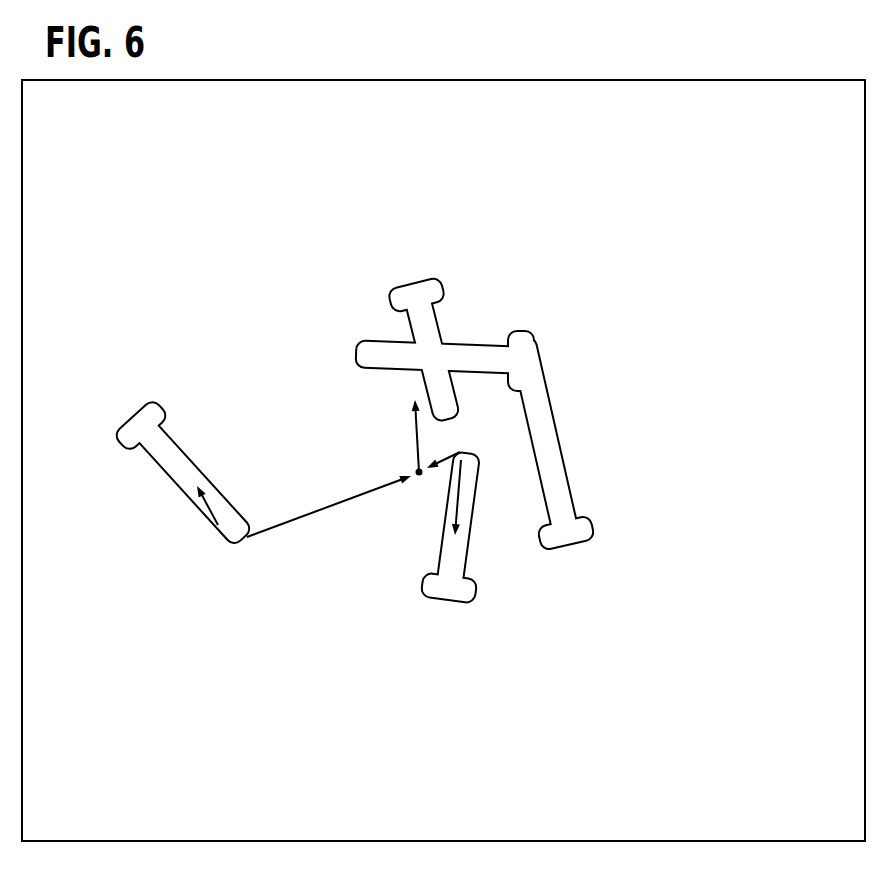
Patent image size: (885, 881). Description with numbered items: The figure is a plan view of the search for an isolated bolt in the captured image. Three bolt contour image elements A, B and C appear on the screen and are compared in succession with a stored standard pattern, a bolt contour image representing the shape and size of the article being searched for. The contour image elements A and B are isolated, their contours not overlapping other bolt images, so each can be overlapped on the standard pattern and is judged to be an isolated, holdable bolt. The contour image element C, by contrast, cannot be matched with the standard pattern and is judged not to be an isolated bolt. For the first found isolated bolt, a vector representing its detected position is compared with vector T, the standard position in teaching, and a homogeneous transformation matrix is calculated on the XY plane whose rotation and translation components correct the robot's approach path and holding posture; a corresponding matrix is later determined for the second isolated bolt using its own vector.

The contour image element A is at (173, 365).
The contour image element B is at (437, 630).
The contour image element C is at (568, 360).